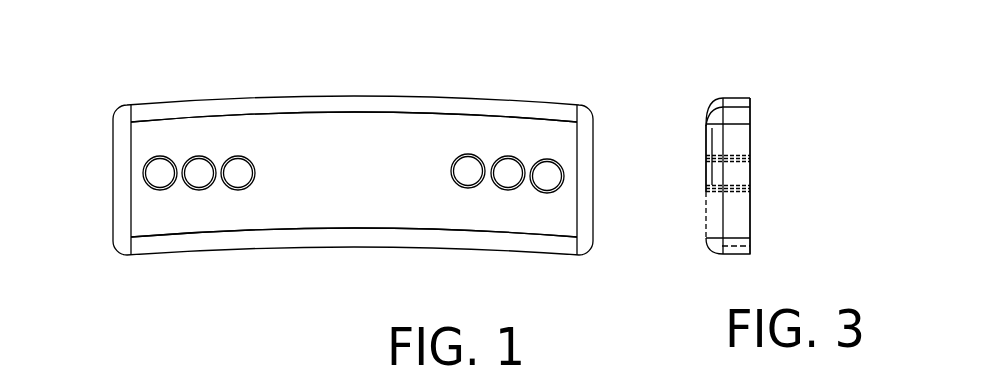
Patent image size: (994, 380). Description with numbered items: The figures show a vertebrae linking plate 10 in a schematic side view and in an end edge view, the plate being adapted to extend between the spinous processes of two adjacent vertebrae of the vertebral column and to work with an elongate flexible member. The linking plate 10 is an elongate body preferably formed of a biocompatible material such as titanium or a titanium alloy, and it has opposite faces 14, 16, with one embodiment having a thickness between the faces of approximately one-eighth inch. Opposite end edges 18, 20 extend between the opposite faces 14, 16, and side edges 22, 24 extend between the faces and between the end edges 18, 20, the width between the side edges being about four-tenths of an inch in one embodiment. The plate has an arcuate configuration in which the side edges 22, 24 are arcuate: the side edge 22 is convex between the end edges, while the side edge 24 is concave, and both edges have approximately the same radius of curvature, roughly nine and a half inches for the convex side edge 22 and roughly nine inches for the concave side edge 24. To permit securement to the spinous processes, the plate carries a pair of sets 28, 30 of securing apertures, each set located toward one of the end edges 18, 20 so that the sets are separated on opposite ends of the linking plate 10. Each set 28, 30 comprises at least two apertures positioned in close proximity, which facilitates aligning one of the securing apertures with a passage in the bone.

In FIG. 1, the linking plate 10 is at (395, 143).
In FIG. 3, the linking plate 10 is at (737, 133).
In FIG. 1, the face 14 is at (290, 203).
In FIG. 3, the face 14 is at (707, 212).
In FIG. 3, the face 16 is at (752, 217).
In FIG. 1, the end edge 18 is at (112, 178).
In FIG. 3, the end edge 20 is at (740, 145).
In FIG. 1, the side edge 22 is at (297, 98).
In FIG. 3, the side edge 22 is at (732, 97).
In FIG. 1, the side edge 24 is at (363, 245).
In FIG. 3, the side edge 24 is at (740, 256).
In FIG. 1, the set of securing apertures 28 is at (203, 117).
In FIG. 1, the set of securing apertures 30 is at (518, 103).